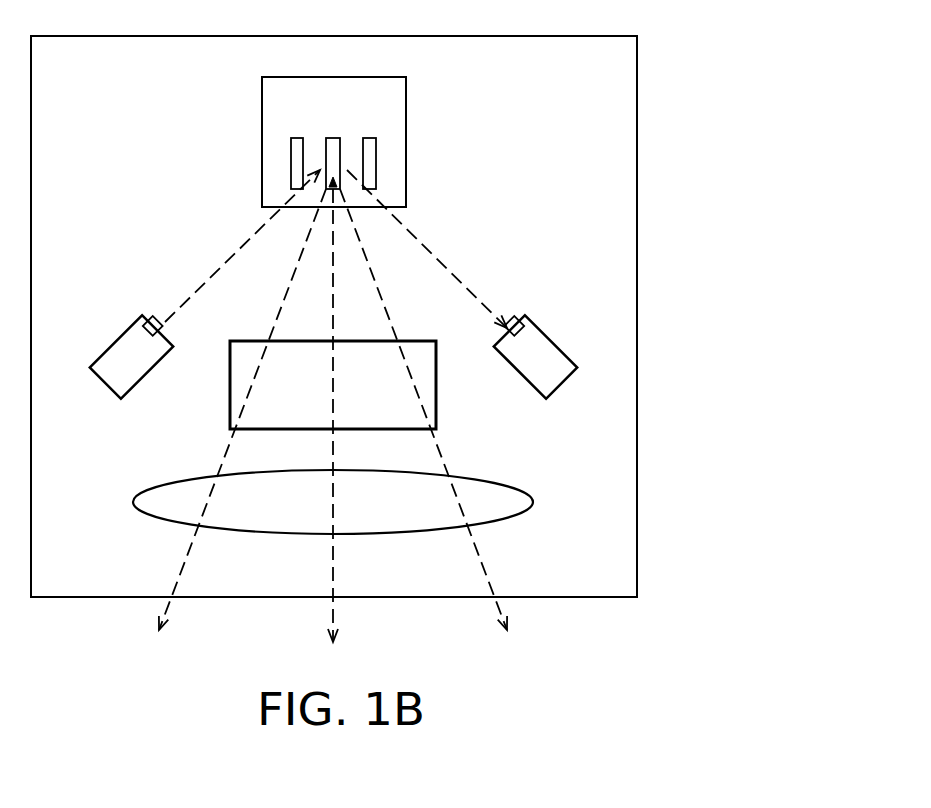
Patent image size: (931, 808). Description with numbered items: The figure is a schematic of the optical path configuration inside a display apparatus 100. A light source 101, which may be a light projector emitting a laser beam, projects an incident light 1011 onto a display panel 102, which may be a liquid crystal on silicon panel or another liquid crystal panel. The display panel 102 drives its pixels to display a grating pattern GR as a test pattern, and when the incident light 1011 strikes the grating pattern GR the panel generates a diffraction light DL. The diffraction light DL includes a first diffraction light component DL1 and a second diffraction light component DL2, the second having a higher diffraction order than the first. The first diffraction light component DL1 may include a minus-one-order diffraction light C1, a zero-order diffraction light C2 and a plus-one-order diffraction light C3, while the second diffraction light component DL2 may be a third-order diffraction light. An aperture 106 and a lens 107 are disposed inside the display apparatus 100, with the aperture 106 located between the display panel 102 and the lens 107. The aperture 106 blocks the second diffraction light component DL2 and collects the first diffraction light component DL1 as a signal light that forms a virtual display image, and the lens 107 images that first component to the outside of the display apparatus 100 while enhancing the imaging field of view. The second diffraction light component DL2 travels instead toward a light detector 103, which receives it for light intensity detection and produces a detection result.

The display apparatus 100 is at (637, 316).
The light source 101 is at (115, 340).
The incident light 1011 is at (232, 257).
The display panel 102 is at (262, 143).
The light detector 103 is at (552, 340).
The aperture 106 is at (230, 388).
The lens 107 is at (167, 484).
The grating pattern GR is at (376, 127).
The −1-order diffraction light C1 is at (284, 300).
The 0-order diffraction light C2 is at (334, 313).
The +1-order diffraction light C3 is at (379, 297).
The diffraction light DL is at (462, 431).
The first diffraction light component DL1 is at (462, 415).
The second diffraction light component DL2 is at (445, 266).